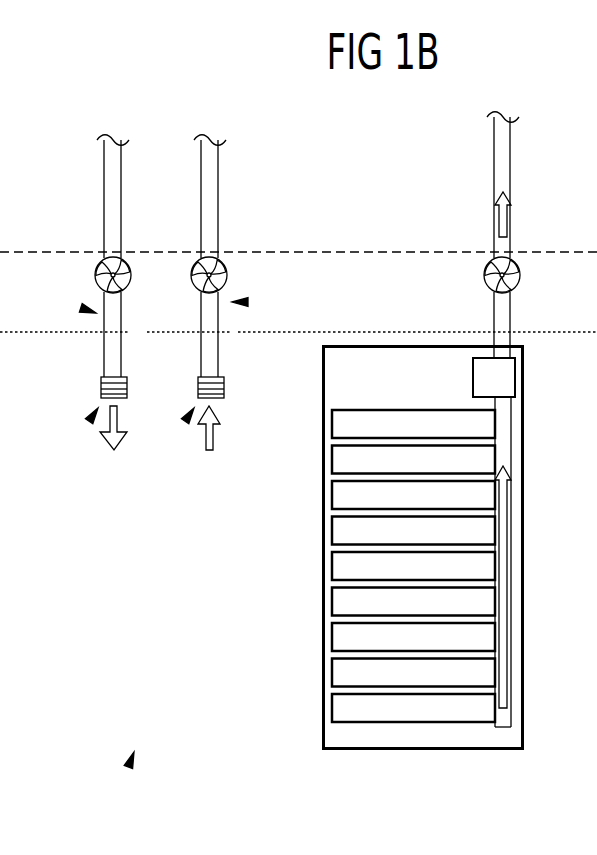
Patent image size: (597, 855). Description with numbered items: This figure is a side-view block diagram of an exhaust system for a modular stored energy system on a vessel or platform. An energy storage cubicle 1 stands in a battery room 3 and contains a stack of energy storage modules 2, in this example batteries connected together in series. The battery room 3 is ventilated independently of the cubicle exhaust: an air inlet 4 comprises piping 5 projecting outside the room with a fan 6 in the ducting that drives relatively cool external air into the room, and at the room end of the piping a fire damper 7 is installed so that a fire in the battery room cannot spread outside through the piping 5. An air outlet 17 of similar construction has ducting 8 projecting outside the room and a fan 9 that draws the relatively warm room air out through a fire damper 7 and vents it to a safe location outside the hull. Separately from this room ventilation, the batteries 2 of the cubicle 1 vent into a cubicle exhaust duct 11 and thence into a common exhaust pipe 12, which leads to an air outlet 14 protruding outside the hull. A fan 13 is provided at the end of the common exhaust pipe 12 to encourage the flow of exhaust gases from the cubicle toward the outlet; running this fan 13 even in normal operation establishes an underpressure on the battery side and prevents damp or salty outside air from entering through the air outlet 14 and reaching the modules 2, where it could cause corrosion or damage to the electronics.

The energy storage cubicle 1 is at (426, 740).
The energy storage modules 2 is at (350, 525).
The battery room 3 is at (128, 767).
The air inlet 4 is at (81, 308).
The piping 5 is at (110, 180).
The fan 6 is at (128, 258).
The fire damper 7 is at (89, 421).
The ducting 8 is at (210, 178).
The fan 9 is at (221, 258).
The cubicle exhaust duct 11 is at (500, 443).
The common exhaust pipe 12 is at (508, 377).
The fan 13 is at (520, 275).
The air outlet 14 is at (503, 175).
The air outlet 17 is at (248, 302).